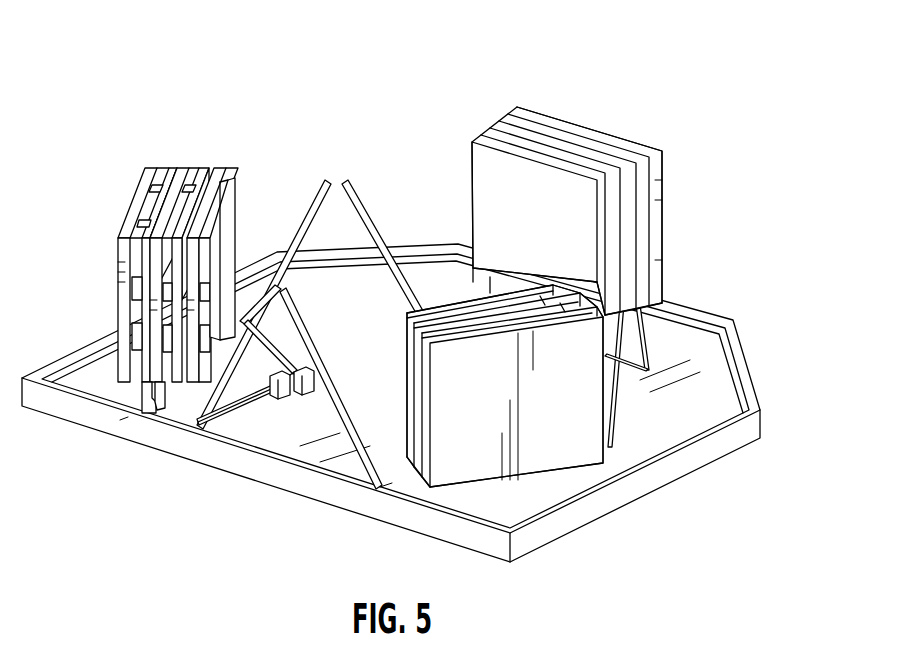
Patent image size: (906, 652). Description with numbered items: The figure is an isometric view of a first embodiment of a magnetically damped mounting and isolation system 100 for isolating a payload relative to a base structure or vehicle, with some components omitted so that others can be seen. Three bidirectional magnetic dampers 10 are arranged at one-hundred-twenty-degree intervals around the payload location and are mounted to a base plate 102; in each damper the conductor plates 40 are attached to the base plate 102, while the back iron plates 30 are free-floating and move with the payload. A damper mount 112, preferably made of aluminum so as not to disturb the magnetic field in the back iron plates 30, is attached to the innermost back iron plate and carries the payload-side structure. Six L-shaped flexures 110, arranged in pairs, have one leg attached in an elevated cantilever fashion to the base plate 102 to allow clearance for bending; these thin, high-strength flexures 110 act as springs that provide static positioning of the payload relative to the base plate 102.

The magnetically damped mounting and isolation system 100 is at (661, 41).
The base plate 102 is at (748, 374).
The bidirectional magnetic damper 10 is at (112, 265).
The back iron plate 30 is at (143, 180).
The damper mount 112 is at (234, 180).
The conductor plate 40 is at (157, 408).
The L-shaped flexure 110 is at (352, 190).